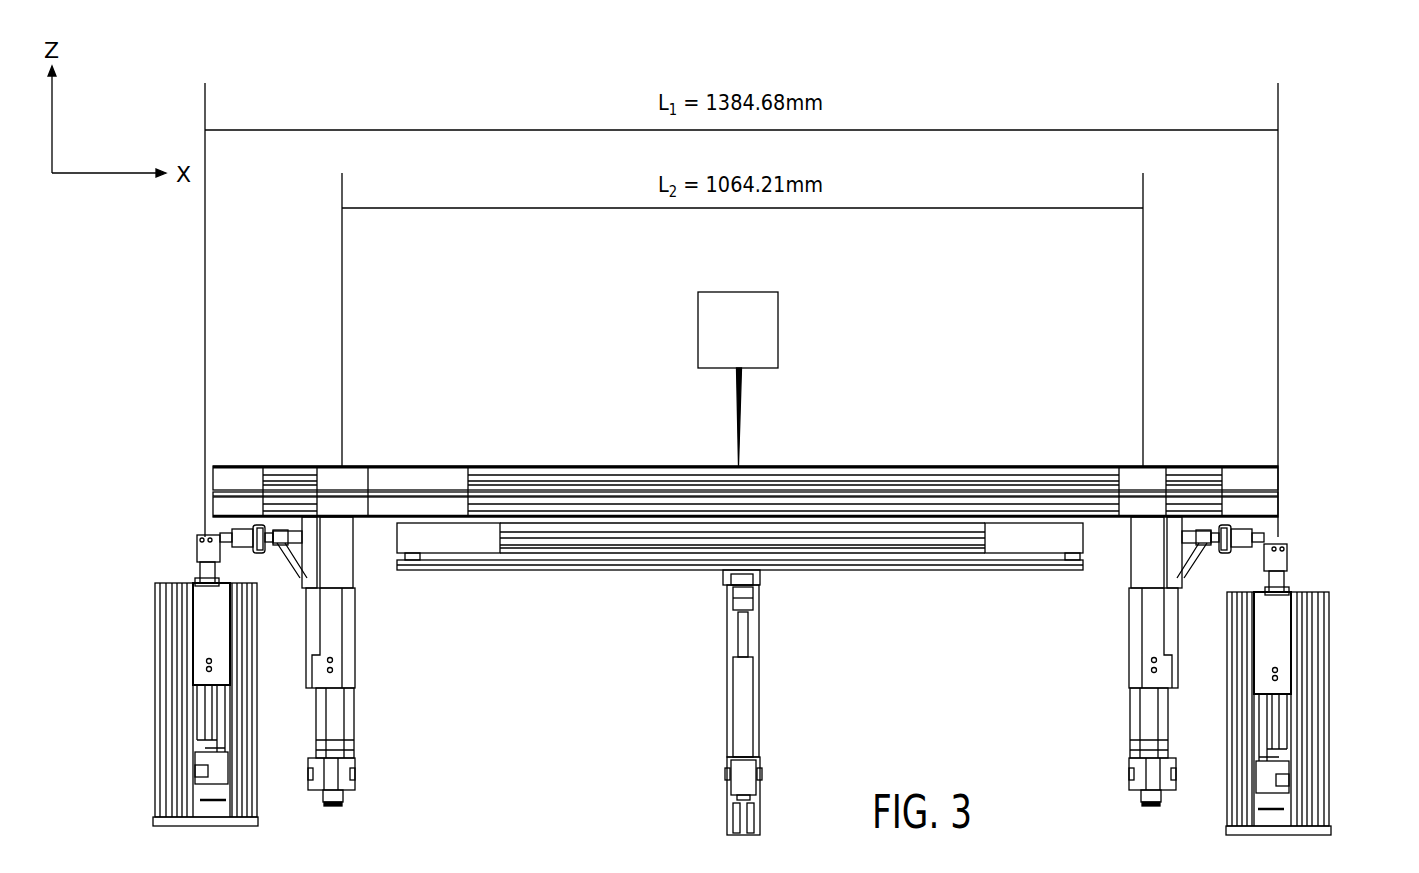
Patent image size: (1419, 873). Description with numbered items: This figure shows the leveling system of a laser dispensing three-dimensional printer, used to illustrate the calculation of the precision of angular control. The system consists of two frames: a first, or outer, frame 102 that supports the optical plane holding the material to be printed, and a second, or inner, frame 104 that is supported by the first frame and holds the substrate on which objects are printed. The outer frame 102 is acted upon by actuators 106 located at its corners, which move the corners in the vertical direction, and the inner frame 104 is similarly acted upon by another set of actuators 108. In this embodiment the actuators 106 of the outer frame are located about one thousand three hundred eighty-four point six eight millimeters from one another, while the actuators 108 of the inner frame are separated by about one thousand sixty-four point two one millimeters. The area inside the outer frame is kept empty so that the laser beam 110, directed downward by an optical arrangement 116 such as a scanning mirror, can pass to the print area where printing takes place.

The first frame 102 is at (745, 474).
The second frame 104 is at (740, 679).
The actuators 106 is at (142, 756).
The actuators 108 is at (368, 673).
The laser beam 110 is at (758, 418).
The optical arrangement 116 is at (790, 336).